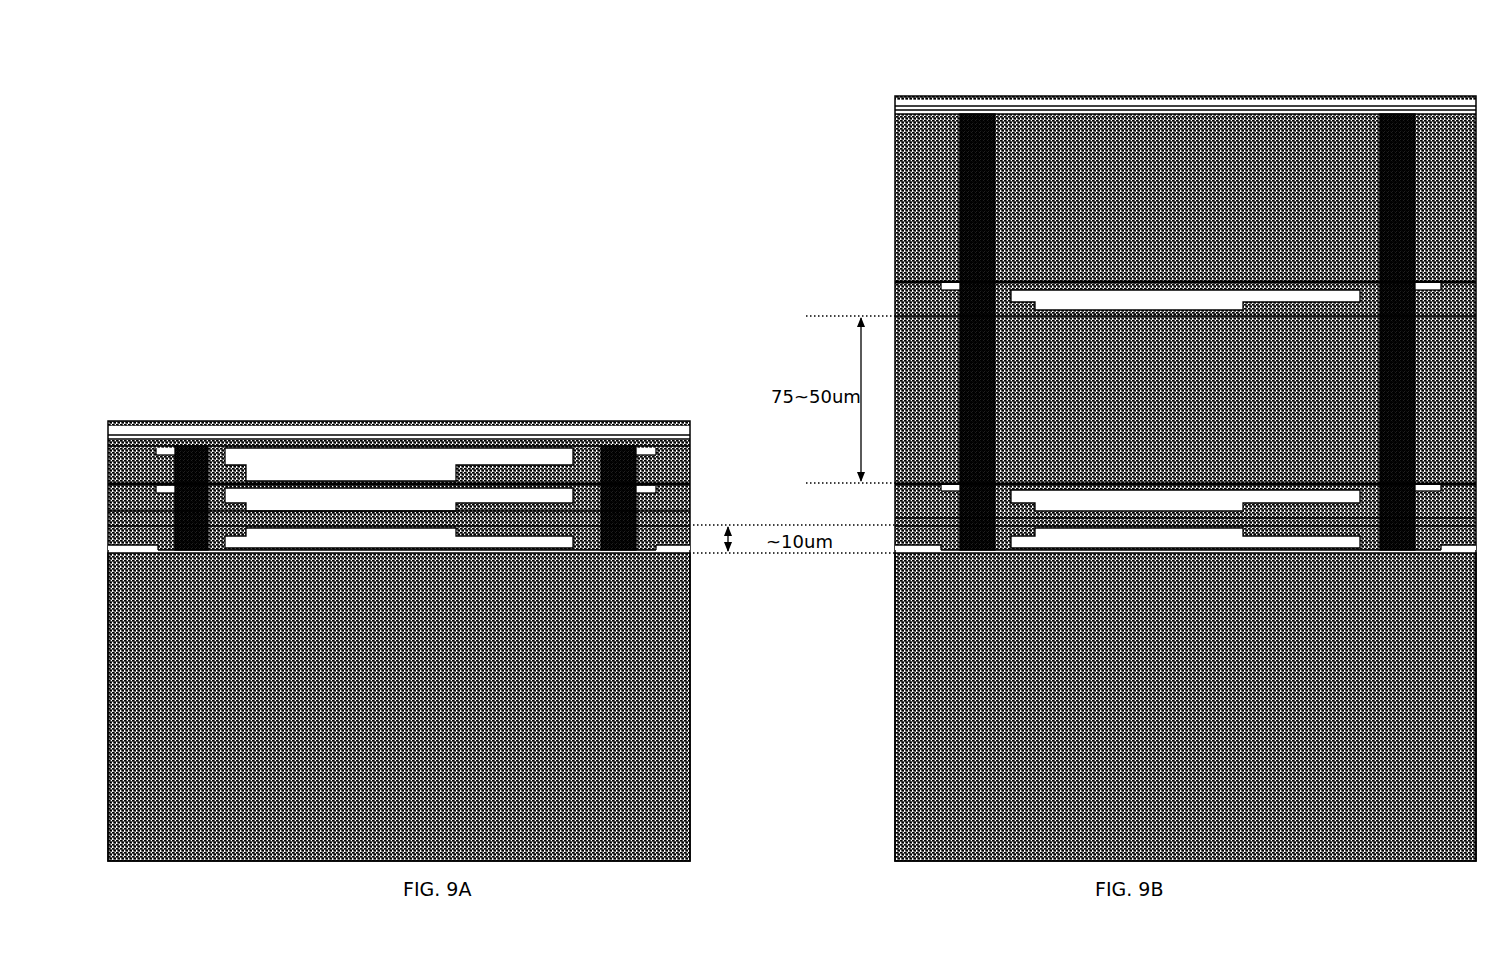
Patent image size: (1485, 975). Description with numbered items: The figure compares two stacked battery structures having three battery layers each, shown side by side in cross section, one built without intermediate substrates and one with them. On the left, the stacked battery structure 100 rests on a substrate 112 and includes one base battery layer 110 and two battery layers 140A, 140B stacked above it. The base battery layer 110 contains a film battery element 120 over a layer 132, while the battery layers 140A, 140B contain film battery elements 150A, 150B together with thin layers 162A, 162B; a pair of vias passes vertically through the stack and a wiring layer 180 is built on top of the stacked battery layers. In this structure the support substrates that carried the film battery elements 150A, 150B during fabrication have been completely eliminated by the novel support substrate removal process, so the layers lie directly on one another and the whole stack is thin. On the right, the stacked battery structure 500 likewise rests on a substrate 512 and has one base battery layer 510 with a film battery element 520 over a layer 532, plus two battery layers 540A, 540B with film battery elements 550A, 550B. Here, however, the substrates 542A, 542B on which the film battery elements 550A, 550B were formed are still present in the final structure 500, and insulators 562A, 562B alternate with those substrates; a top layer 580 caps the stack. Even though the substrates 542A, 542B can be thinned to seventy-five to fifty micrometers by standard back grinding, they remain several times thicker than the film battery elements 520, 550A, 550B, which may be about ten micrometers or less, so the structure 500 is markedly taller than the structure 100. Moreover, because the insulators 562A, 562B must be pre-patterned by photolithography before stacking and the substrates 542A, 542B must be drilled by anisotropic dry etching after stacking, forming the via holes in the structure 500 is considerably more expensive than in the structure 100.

In FIG. 9A, the stacked battery structure 100 is at (170, 362).
In FIG. 9A, the base battery layer 110 is at (443, 560).
In FIG. 9A, the substrate 112 is at (407, 708).
In FIG. 9A, the film battery element 120 is at (366, 541).
In FIG. 9A, the dielectric layer 132 is at (152, 538).
In FIG. 9A, the battery layer 140A is at (446, 494).
In FIG. 9A, the battery layer 140B is at (432, 444).
In FIG. 9A, the film battery element 150A is at (376, 502).
In FIG. 9A, the film battery element 150B is at (376, 465).
In FIG. 9A, the first bonding layer 162A is at (156, 469).
In FIG. 9A, the second bonding layer 162B is at (156, 506).
In FIG. 9A, the wiring layer 180 is at (437, 413).
In FIG. 9B, the stacked battery structure 500 is at (845, 100).
In FIG. 9B, the base battery layer 510 is at (1139, 560).
In FIG. 9B, the substrate 512 is at (1200, 708).
In FIG. 9B, the film battery element 520 is at (1154, 540).
In FIG. 9B, the dielectric layer 532 is at (928, 538).
In FIG. 9B, the battery layer 540A is at (1124, 504).
In FIG. 9B, the battery layer 540B is at (1123, 298).
In FIG. 9B, the substrate 542A is at (1213, 401).
In FIG. 9B, the substrate 542B is at (1203, 201).
In FIG. 9B, the film battery element 550A is at (1160, 503).
In FIG. 9B, the film battery element 550B is at (1160, 301).
In FIG. 9B, the insulator 562A is at (945, 305).
In FIG. 9B, the insulator 562B is at (945, 506).
In FIG. 9B, the cap layer 580 is at (1222, 88).